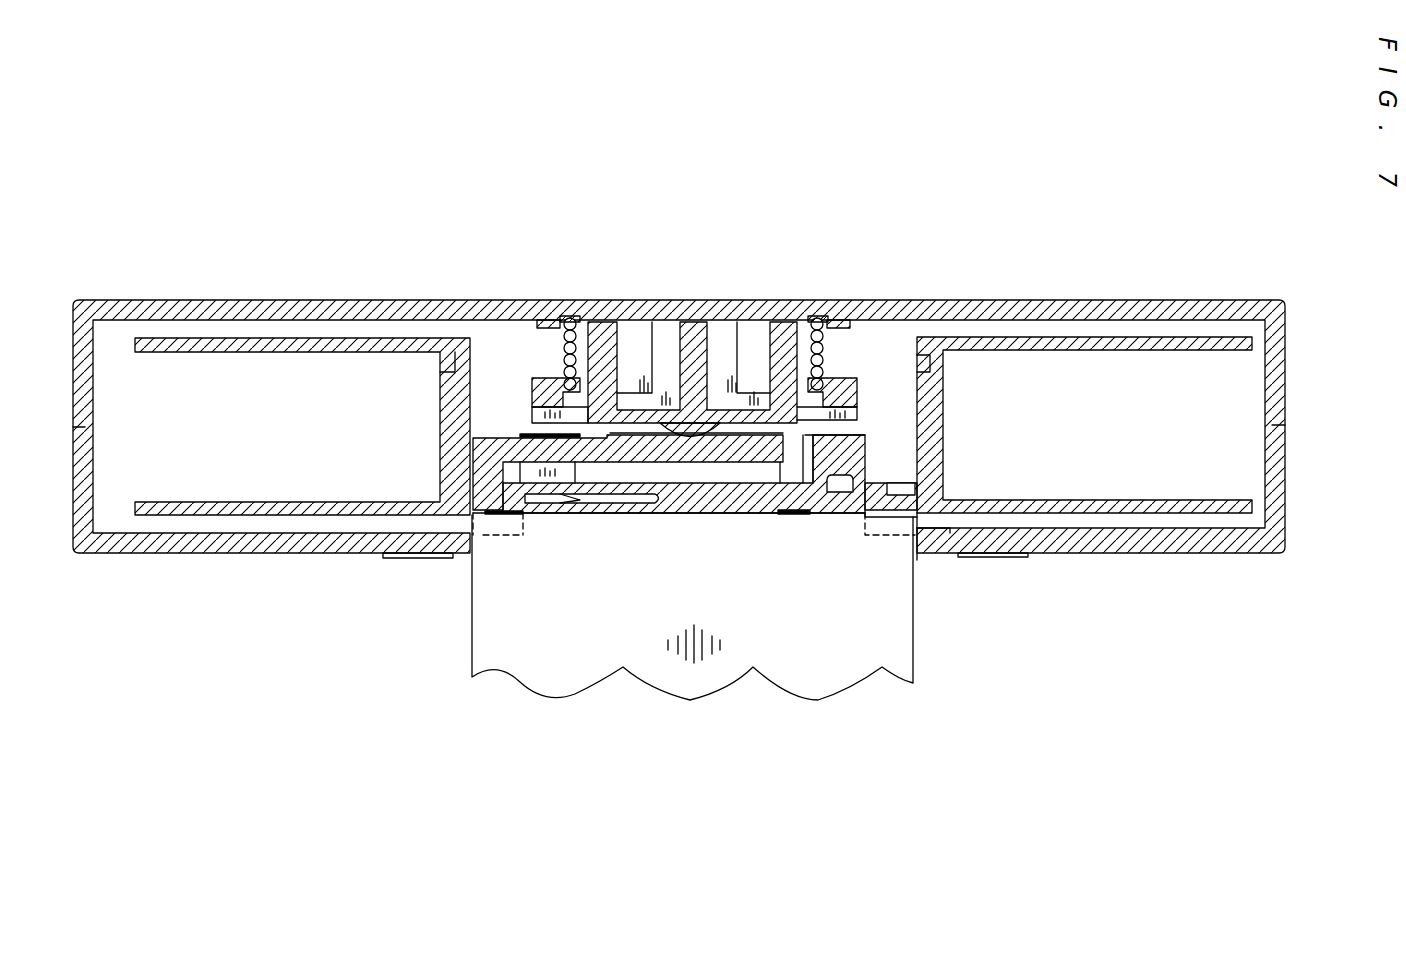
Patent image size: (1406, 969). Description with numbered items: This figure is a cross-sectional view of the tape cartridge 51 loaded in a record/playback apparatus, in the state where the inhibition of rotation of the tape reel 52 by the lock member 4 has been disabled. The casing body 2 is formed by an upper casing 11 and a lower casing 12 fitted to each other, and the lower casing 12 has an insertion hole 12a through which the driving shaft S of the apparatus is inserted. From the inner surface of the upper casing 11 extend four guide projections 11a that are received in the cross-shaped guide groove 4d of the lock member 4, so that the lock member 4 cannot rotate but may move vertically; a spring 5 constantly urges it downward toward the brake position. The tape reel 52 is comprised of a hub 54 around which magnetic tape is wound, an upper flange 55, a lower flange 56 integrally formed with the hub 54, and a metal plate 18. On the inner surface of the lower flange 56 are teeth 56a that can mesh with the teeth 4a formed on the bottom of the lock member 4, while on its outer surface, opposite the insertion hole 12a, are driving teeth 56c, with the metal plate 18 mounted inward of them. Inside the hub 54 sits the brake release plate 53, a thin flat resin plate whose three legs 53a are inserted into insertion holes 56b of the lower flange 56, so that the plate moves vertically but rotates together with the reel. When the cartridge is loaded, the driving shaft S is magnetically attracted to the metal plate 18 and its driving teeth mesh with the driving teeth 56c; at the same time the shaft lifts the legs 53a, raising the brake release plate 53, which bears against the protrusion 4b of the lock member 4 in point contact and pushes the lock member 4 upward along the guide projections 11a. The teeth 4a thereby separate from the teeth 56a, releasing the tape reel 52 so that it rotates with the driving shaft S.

The casing body 2 is at (1058, 237).
The upper casing 11 is at (1090, 300).
The guide projections 11a is at (633, 360).
The lower casing 12 is at (1095, 555).
The insertion hole 12a is at (925, 545).
The lock member 4 is at (855, 412).
The teeth 4a is at (530, 412).
The protrusion 4b is at (697, 437).
The guide groove 4d is at (725, 385).
The spring 5 is at (565, 362).
The metal plate 18 is at (601, 510).
The tape cartridge 51 is at (727, 214).
The tape reel 52 is at (352, 409).
The brake release plate 53 is at (485, 452).
The legs 53a is at (503, 513).
The hub 54 is at (440, 490).
The upper flange 55 is at (340, 345).
The lower flange 56 is at (290, 510).
The teeth 56a is at (565, 432).
The insertion holes 56b is at (485, 513).
The driving teeth 56c is at (487, 515).
The driving shaft S is at (573, 682).